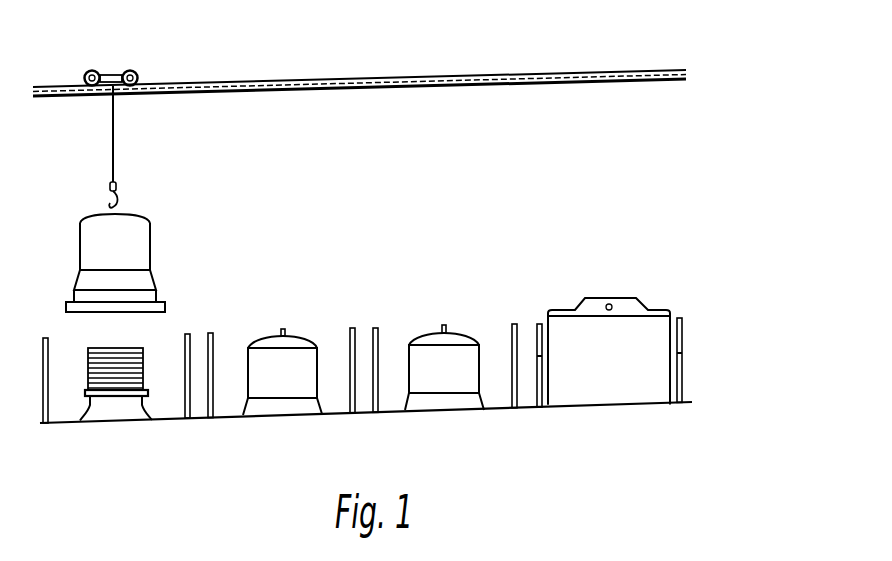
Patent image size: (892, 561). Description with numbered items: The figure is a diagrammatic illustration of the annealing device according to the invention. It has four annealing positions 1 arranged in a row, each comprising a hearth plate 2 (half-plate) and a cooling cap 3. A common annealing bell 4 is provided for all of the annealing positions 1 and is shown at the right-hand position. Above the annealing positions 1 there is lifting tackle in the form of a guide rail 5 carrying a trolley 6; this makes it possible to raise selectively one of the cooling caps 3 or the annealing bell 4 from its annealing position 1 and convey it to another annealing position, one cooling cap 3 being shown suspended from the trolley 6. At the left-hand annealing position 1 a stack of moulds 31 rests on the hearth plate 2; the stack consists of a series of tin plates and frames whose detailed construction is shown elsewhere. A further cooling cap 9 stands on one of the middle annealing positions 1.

The annealing position 1 is at (176, 318).
The hearth plate 2 is at (88, 366).
The cooling cap 3 is at (80, 237).
The stack of moulds 31 is at (143, 366).
The annealing bell 4 is at (572, 327).
The guide rail 5 is at (358, 79).
The trolley 6 is at (112, 70).
The bell container 9 is at (249, 351).